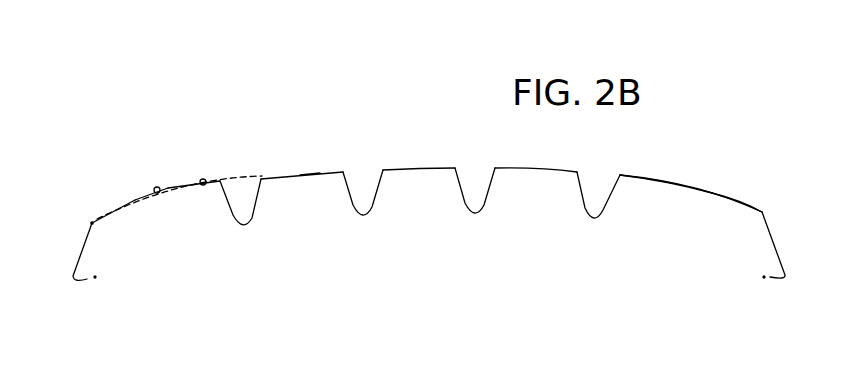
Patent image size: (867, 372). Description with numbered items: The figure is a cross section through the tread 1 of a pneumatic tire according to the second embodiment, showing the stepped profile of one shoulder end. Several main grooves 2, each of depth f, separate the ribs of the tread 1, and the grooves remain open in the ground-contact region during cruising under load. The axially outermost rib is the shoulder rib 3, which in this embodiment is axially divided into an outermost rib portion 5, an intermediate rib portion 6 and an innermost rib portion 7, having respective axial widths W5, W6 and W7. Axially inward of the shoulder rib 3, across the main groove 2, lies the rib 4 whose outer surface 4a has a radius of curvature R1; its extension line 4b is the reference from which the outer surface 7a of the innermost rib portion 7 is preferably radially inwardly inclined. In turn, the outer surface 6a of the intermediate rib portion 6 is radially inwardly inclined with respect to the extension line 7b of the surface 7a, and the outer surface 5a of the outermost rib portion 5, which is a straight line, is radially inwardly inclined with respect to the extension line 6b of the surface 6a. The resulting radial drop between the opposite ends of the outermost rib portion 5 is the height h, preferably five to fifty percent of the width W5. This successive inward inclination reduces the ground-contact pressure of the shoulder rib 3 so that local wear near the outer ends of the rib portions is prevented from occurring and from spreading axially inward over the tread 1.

The tread 1 is at (652, 160).
The main groove 2 is at (243, 222).
The shoulder rib 3 is at (763, 255).
The rib 4 is at (420, 170).
The outer surface of the rib 4a is at (320, 172).
The extension line of the outer surface of the rib 4b is at (203, 186).
The outermost rib portion 5 is at (758, 218).
The outer surface of the outermost rib portion 5a is at (101, 224).
The intermediate rib portion 6 is at (712, 203).
The outer surface of the intermediate rib portion 6a is at (140, 192).
The extension line of the outer surface of the intermediate rib portion 6b is at (98, 215).
The innermost rib portion 7 is at (670, 195).
The outer surface of the innermost rib portion 7a is at (185, 185).
The extension line of the outer surface of the innermost rib portion 7b is at (160, 194).
The width of the outer rib portion W5 is at (136, 200).
The width of the intermediate rib portion W6 is at (178, 182).
The width of the innermost rib portion W7 is at (220, 178).
The height h is at (92, 223).
The depth of the main groove f is at (285, 177).
The radius of curvature R1 is at (305, 175).